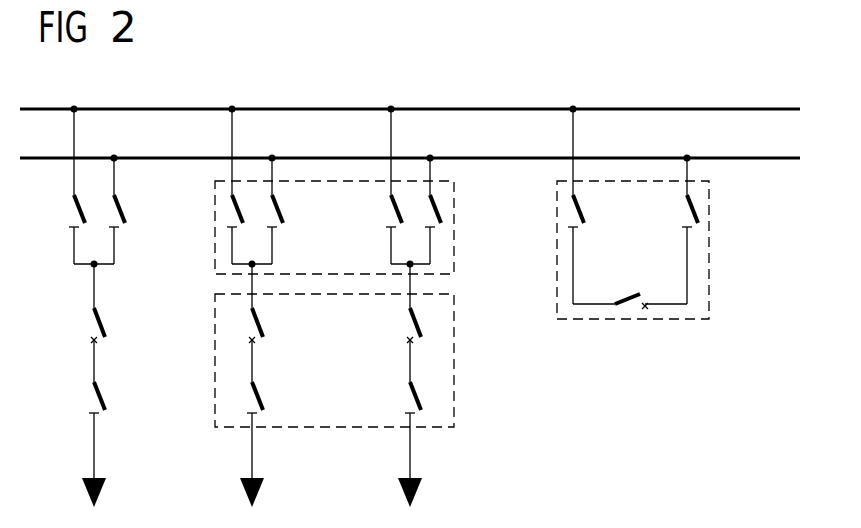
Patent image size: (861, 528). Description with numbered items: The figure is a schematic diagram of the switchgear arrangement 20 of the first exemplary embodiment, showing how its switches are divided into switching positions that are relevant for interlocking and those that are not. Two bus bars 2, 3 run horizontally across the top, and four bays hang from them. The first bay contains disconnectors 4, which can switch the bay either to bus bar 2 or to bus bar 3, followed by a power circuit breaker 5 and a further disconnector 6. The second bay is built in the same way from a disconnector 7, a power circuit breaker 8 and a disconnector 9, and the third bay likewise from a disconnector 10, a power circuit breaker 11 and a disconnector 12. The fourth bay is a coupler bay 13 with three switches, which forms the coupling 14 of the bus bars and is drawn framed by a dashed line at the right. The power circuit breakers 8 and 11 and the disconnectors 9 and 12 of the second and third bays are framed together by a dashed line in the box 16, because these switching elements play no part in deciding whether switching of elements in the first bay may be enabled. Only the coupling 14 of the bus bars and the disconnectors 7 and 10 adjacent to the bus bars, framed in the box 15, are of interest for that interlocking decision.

The bus bar 2 is at (730, 108).
The bus bar 3 is at (730, 160).
The disconnectors 4 is at (74, 245).
The power circuit breaker 5 is at (93, 340).
The disconnector 6 is at (93, 413).
The disconnector 7 is at (232, 245).
The power circuit breaker 8 is at (252, 340).
The disconnector 9 is at (252, 413).
The disconnector 10 is at (430, 255).
The power circuit breaker 11 is at (412, 341).
The disconnector 12 is at (412, 414).
The coupler bay 13 is at (648, 309).
The coupling of the bus bars 14 is at (709, 254).
The box 15 is at (215, 203).
The box 16 is at (215, 310).
The switchgear arrangement 20 is at (753, 398).